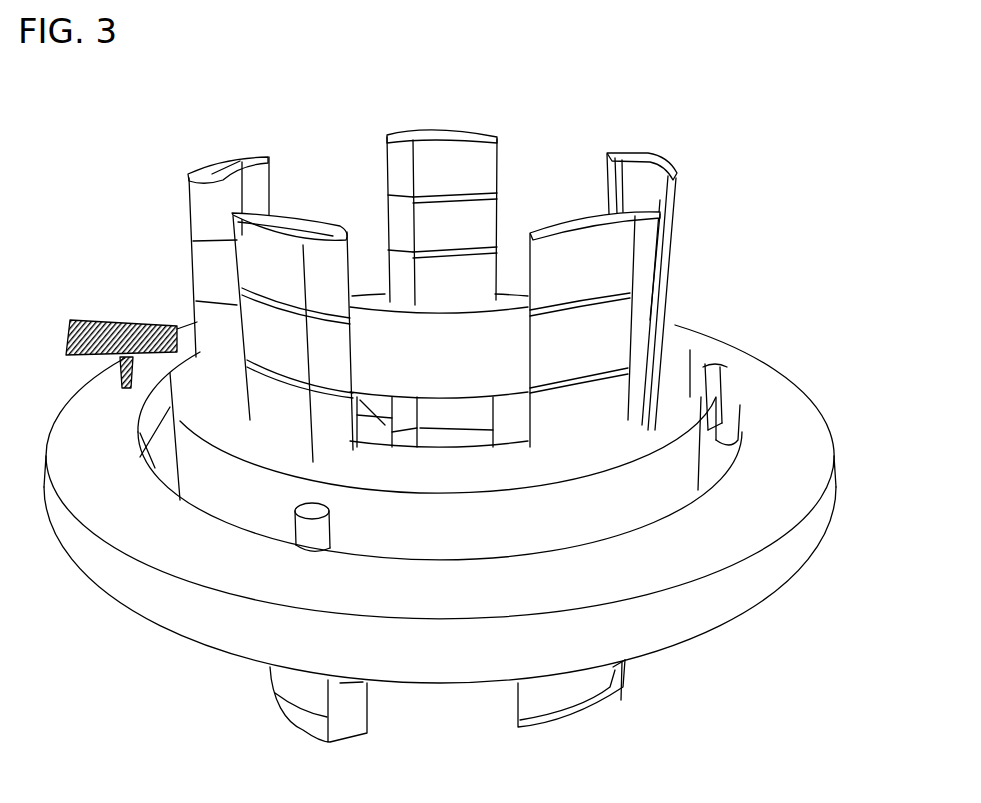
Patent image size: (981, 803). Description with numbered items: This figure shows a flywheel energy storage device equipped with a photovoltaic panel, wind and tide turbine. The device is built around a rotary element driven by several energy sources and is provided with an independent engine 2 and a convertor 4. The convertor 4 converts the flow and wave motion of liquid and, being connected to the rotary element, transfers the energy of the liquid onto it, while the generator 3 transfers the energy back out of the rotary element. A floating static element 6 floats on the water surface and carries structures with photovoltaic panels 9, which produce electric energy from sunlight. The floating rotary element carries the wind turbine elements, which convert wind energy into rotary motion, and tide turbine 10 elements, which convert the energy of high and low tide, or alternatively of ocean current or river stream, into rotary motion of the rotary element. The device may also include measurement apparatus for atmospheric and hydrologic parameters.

The independent engine 2 is at (717, 363).
The generator 3 is at (318, 510).
The convertor 4 is at (655, 161).
The floating static element 6 is at (778, 420).
The photovoltaic panel 9 is at (127, 328).
The tide turbine 10 is at (342, 703).